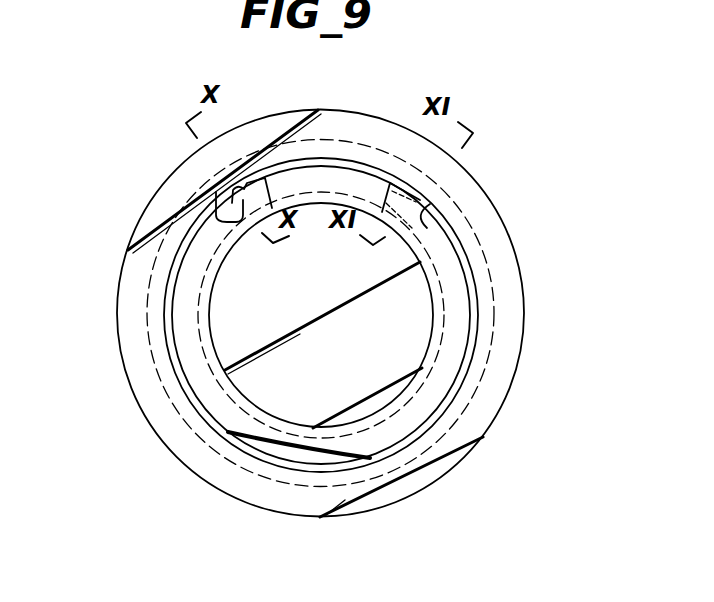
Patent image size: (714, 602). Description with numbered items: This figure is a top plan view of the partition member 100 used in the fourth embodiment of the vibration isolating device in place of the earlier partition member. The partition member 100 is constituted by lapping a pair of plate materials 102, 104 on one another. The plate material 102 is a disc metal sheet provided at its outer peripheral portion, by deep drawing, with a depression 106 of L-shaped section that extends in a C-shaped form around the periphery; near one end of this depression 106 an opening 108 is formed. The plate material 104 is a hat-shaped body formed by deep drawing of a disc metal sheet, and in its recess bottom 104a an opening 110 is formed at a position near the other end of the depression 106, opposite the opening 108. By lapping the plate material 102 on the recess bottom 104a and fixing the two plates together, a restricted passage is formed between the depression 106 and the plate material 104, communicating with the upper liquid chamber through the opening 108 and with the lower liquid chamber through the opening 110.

The partition member 100 is at (520, 350).
The plate material 102 is at (167, 343).
The plate material 104 is at (467, 463).
The recess bottom 104a is at (398, 322).
The depression 106 is at (187, 284).
The opening 108 is at (237, 196).
The opening 110 is at (427, 205).